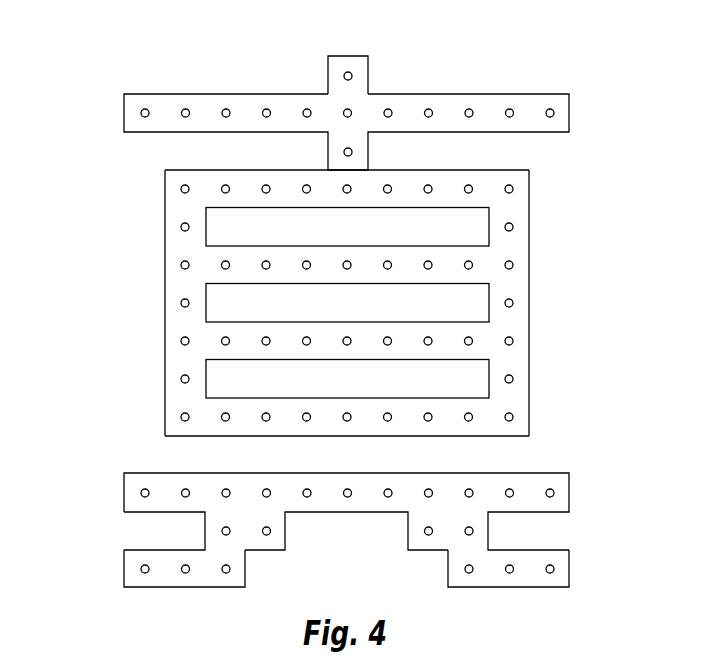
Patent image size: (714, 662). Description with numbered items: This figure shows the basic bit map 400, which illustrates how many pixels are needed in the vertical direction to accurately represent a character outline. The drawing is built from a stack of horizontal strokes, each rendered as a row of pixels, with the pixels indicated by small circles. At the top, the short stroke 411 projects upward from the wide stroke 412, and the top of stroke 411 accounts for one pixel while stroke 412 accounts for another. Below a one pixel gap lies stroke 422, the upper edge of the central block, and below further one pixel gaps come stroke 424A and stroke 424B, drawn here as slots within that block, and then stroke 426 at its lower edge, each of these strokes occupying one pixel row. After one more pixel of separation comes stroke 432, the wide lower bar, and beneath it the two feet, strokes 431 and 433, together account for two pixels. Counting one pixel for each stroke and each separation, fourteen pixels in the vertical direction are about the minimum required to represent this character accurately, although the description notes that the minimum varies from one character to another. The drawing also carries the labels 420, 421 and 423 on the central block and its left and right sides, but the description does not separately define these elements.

The basic bit map 400 is at (560, 52).
The stroke 411 is at (348, 56).
The stroke 412 is at (569, 110).
The central plate 420 is at (112, 263).
The left edge of central plate 421 is at (165, 303).
The stroke 422 is at (468, 170).
The right edge of central plate 423 is at (529, 227).
The stroke 424A is at (268, 284).
The stroke 424B is at (388, 322).
The stroke 426 is at (466, 436).
The stroke 431 is at (183, 587).
The stroke 432 is at (569, 493).
The stroke 433 is at (508, 587).